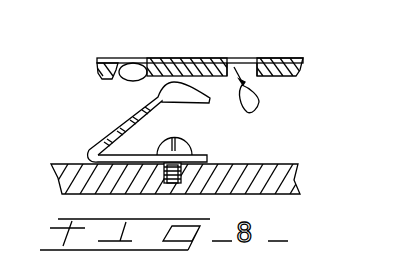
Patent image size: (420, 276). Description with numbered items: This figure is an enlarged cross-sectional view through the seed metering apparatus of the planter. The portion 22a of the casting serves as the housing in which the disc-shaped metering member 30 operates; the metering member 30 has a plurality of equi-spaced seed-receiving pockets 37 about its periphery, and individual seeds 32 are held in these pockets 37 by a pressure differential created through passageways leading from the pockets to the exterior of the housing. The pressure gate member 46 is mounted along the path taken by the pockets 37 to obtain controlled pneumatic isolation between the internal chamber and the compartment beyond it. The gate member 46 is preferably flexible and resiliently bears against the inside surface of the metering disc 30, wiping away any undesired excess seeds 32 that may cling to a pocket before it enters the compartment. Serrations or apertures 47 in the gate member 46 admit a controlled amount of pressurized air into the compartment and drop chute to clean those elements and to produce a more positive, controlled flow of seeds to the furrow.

The metering member 30 is at (190, 63).
The seeds 32 is at (132, 68).
The seed-receiving pockets 37 is at (251, 70).
The serrations or apertures 47 is at (120, 115).
The pressure gate member 46 is at (176, 101).
The portion of casting 22a is at (296, 180).